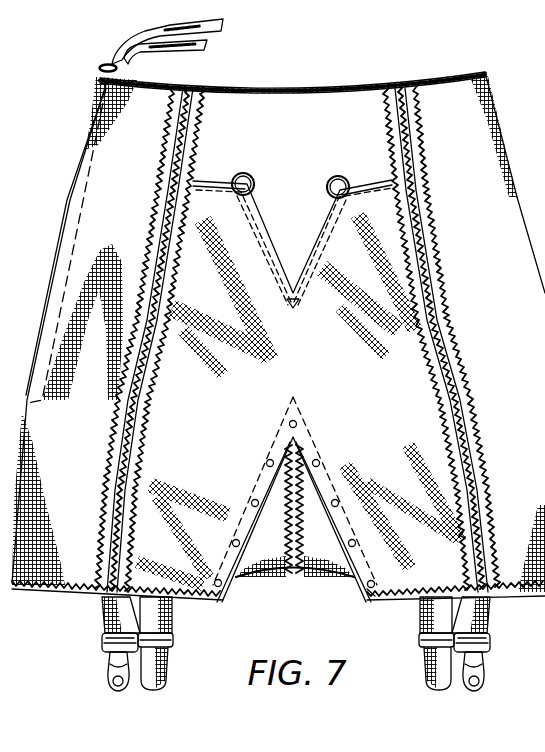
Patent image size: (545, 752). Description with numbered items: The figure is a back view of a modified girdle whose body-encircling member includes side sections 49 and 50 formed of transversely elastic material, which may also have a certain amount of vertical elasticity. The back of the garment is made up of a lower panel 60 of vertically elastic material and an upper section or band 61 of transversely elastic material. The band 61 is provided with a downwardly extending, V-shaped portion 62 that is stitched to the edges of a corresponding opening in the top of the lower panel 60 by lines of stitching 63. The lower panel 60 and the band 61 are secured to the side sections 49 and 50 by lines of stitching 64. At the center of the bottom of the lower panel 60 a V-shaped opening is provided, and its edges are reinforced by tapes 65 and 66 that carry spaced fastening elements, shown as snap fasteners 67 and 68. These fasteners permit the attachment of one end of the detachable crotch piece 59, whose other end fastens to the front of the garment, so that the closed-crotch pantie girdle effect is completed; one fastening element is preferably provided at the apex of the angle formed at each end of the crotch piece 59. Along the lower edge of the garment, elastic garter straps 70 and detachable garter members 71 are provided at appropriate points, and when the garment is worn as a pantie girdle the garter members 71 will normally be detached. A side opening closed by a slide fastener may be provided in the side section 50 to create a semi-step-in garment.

The side section 49 is at (467, 130).
The side section 50 is at (122, 145).
The detachable crotch piece 59 is at (322, 553).
The lower panel 60 is at (470, 388).
The upper section or band 61 is at (305, 103).
The V-shaped portion 62 is at (297, 233).
The lines of stitching 63 is at (250, 218).
The lines of stitching 64 is at (437, 300).
The tape 65 is at (275, 431).
The tape 66 is at (310, 450).
The snap fasteners 67 is at (264, 463).
The snap fasteners 68 is at (364, 551).
The elastic garter straps 70 is at (162, 620).
The detachable garter members 71 is at (108, 668).